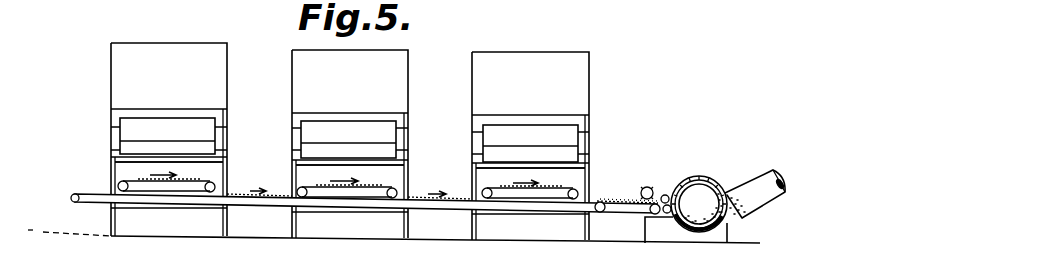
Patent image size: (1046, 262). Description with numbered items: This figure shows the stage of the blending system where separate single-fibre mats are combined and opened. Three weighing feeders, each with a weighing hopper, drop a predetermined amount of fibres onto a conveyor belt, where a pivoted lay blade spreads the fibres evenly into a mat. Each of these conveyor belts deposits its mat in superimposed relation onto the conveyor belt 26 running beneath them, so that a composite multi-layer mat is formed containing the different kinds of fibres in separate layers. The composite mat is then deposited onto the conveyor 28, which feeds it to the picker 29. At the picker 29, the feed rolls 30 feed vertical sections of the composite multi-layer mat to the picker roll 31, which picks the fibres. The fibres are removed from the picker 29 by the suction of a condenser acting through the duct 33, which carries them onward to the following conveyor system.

The conveyor belt 26 is at (93, 202).
The conveyor 28 is at (623, 200).
The picker 29 is at (716, 150).
The feed rolls 30 is at (672, 178).
The picker roll 31 is at (706, 188).
The duct 33 is at (755, 200).